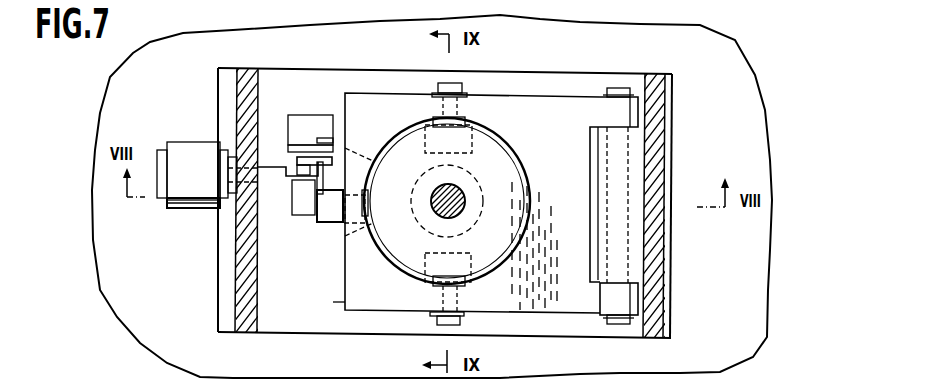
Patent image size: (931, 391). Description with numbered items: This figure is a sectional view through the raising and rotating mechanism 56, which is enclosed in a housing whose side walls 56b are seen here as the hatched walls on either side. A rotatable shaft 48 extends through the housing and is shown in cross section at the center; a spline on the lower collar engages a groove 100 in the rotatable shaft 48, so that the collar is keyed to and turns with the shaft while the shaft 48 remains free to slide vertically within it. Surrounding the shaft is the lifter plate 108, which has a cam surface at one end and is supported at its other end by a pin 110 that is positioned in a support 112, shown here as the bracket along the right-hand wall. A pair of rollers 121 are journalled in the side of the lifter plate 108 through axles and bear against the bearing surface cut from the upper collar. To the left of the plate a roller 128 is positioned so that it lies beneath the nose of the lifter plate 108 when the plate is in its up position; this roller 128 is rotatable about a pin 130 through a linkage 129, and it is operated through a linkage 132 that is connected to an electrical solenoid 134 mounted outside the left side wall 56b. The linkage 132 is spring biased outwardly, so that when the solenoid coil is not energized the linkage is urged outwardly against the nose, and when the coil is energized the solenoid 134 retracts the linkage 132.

The raising and rotating mechanism 56 is at (690, 116).
The side walls 56b is at (245, 100).
The electrical solenoid 134 is at (205, 150).
The linkage 132 is at (273, 175).
The pin 130 is at (325, 142).
The linkage 129 is at (307, 157).
The roller 128 is at (300, 216).
The lifter plate 108 is at (576, 203).
The groove 100 is at (430, 203).
The rotatable shaft 48 is at (464, 200).
The rollers 121 is at (468, 140).
The support 112 is at (620, 213).
The pin 110 is at (625, 255).